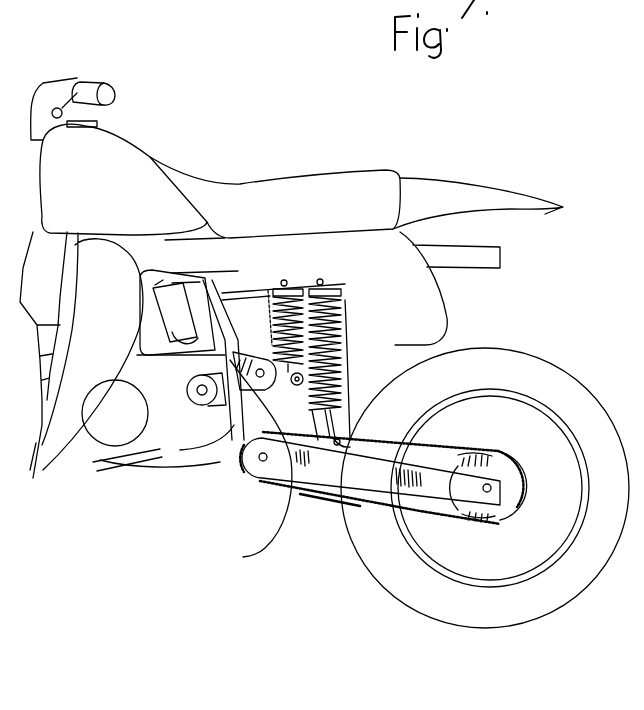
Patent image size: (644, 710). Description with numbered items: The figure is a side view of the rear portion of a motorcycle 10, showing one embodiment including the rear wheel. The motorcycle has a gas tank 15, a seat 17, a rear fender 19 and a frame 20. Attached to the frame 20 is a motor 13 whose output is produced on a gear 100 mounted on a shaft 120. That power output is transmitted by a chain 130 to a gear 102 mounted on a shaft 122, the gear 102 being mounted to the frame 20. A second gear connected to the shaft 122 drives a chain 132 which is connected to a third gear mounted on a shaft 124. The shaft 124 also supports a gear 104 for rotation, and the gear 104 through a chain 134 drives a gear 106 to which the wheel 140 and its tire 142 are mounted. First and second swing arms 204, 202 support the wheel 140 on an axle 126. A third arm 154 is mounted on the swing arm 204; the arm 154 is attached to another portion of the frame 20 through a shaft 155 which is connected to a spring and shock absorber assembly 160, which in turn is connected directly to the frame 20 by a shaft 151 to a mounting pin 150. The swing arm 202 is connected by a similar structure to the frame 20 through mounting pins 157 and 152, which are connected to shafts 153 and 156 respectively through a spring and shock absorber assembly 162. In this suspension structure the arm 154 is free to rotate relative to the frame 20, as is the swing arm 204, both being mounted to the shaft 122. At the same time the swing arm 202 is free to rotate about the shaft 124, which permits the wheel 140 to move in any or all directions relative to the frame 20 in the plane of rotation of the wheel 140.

The motorcycle 10 is at (209, 138).
The motor 13 is at (124, 433).
The gas tank 15 is at (113, 150).
The seat 17 is at (299, 190).
The rear fender 19 is at (465, 190).
The frame 20 is at (241, 283).
The gear 100 is at (190, 383).
The gear 102 is at (254, 360).
The gear 104 is at (247, 470).
The gear 106 is at (507, 474).
The shaft 120 is at (202, 403).
The shaft 122 is at (243, 557).
The shaft 124 is at (265, 462).
The axle 126 is at (487, 493).
The chain 130 is at (214, 373).
The chain 132 is at (187, 467).
The chain 134 is at (323, 495).
The wheel 140 is at (510, 395).
The tire 142 is at (512, 384).
The mounting pin 150 is at (285, 280).
The shaft 151 is at (287, 281).
The mounting pin 152 is at (322, 279).
The shaft 153 is at (345, 300).
The third arm 154 is at (311, 425).
The shaft 155 is at (297, 385).
The shaft 156 is at (341, 373).
The mounting pin 157 is at (374, 440).
The spring and shock absorber assembly 160 is at (273, 314).
The spring and shock absorber assembly 162 is at (337, 303).
The second swing arm 202 is at (373, 473).
The first swing arm 204 is at (230, 360).